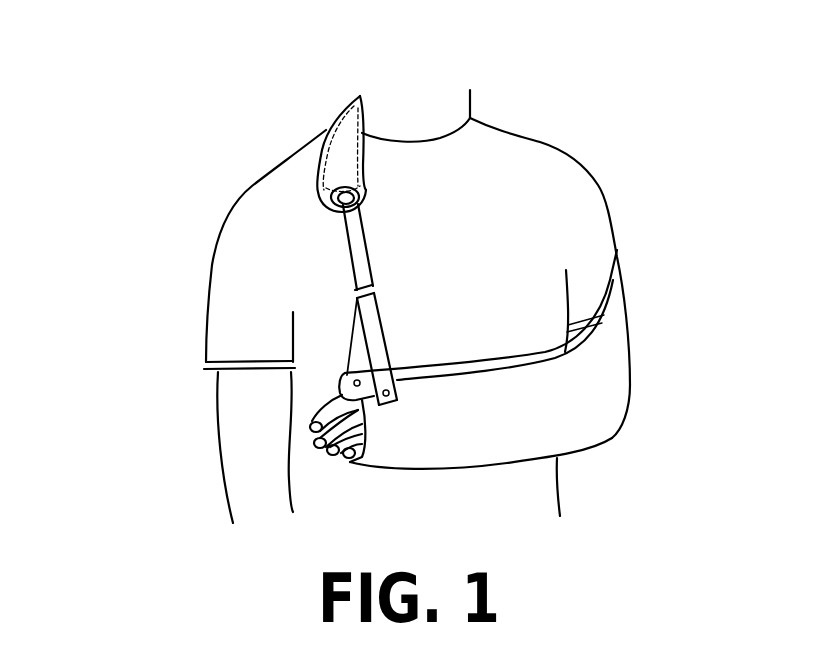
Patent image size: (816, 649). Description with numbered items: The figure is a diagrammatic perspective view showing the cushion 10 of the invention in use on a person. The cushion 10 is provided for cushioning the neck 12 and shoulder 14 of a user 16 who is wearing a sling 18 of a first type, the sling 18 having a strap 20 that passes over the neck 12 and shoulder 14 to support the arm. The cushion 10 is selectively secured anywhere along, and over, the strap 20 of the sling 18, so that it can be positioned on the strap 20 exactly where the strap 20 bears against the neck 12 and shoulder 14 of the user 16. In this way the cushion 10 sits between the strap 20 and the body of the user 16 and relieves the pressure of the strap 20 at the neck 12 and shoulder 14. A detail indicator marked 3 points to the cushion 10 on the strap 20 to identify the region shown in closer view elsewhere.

The cushion 10 is at (215, 85).
The neck 12 is at (338, 97).
The shoulder 14 is at (305, 168).
The user 16 is at (190, 343).
The sling 18 is at (628, 453).
The strap 20 is at (325, 242).
The detail view reference to FIG. 3 is at (305, 126).